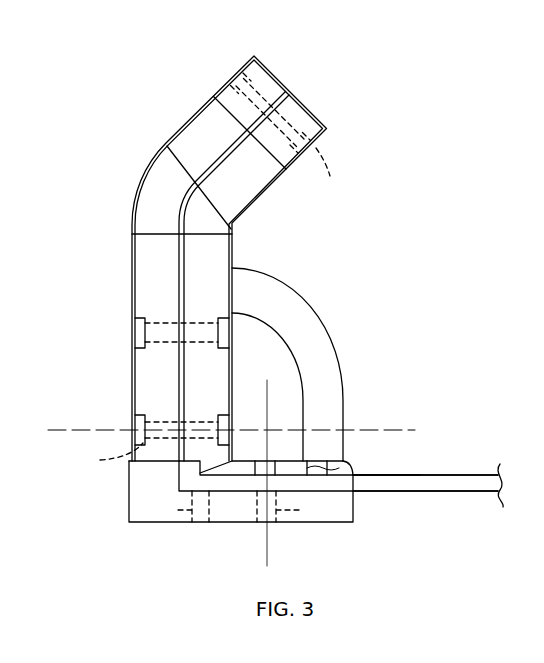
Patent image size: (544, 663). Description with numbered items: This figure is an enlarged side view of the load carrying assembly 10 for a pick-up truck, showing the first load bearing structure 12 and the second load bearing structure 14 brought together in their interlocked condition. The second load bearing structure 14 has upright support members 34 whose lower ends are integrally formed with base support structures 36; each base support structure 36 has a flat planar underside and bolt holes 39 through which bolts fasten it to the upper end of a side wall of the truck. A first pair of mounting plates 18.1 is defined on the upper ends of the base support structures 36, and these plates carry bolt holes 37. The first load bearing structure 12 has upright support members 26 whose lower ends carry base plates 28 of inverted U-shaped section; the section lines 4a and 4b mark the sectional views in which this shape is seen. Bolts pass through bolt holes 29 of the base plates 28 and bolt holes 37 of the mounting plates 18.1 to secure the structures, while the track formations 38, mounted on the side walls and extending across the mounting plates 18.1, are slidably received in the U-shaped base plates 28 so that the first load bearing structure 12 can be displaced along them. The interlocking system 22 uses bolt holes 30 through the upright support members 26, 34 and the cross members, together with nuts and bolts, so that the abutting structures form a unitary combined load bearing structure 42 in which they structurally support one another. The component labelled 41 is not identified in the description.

The load carrying assembly 10 is at (124, 188).
The first load bearing structure 12 is at (306, 123).
The second load bearing structure 14 is at (262, 79).
The first pair of mounting plates 18.1 is at (341, 500).
The interlocking system 22 is at (212, 92).
The upright support members 26 is at (208, 288).
The base plates 28 is at (248, 466).
The bolt holes 29 is at (258, 481).
The bolt holes 30 is at (320, 160).
The upright support members 34 is at (148, 294).
The base support structures 36 is at (145, 487).
The bolt holes 37 is at (290, 499).
The track formations 38 is at (389, 486).
The bolt holes 39 is at (191, 509).
The clip 41 is at (243, 82).
The unitary combined load bearing structure 42 is at (302, 90).
The section line 4a is at (59, 367).
The section line 4b is at (290, 403).